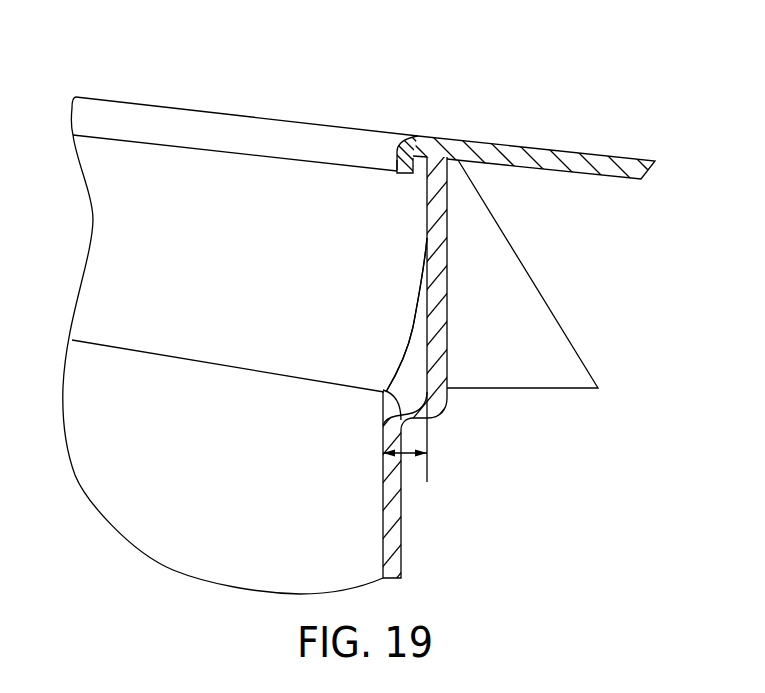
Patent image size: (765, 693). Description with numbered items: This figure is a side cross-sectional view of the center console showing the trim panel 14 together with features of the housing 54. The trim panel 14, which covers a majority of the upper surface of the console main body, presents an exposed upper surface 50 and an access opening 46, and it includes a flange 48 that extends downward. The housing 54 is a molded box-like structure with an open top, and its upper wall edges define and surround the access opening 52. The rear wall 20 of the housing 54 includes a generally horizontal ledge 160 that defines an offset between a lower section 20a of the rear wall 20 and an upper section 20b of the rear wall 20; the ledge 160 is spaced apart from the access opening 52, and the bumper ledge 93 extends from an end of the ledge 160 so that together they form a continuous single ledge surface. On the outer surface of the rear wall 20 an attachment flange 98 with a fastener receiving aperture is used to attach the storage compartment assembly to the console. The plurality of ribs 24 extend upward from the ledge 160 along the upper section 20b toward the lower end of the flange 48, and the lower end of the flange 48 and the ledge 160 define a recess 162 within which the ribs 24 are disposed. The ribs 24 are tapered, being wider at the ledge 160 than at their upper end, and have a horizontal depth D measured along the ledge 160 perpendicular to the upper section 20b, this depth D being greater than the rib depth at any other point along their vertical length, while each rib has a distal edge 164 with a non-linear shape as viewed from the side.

The trim panel 14 is at (547, 138).
The rear wall 20 is at (457, 374).
The lower section of the rear wall 20a is at (390, 513).
The upper section of the rear wall 20b is at (440, 297).
The plurality of ribs 24 is at (413, 362).
The access opening 46 is at (199, 130).
The flange 48 is at (397, 163).
The upper surface 50 is at (518, 143).
The access opening 52 is at (413, 157).
The housing 54 is at (240, 92).
The bumper ledge 93 is at (178, 355).
The attachment flange 98 is at (522, 335).
The ledge 160 is at (402, 392).
The recess 162 is at (382, 263).
The distal edge 164 is at (417, 312).
The horizontal depth D is at (403, 457).